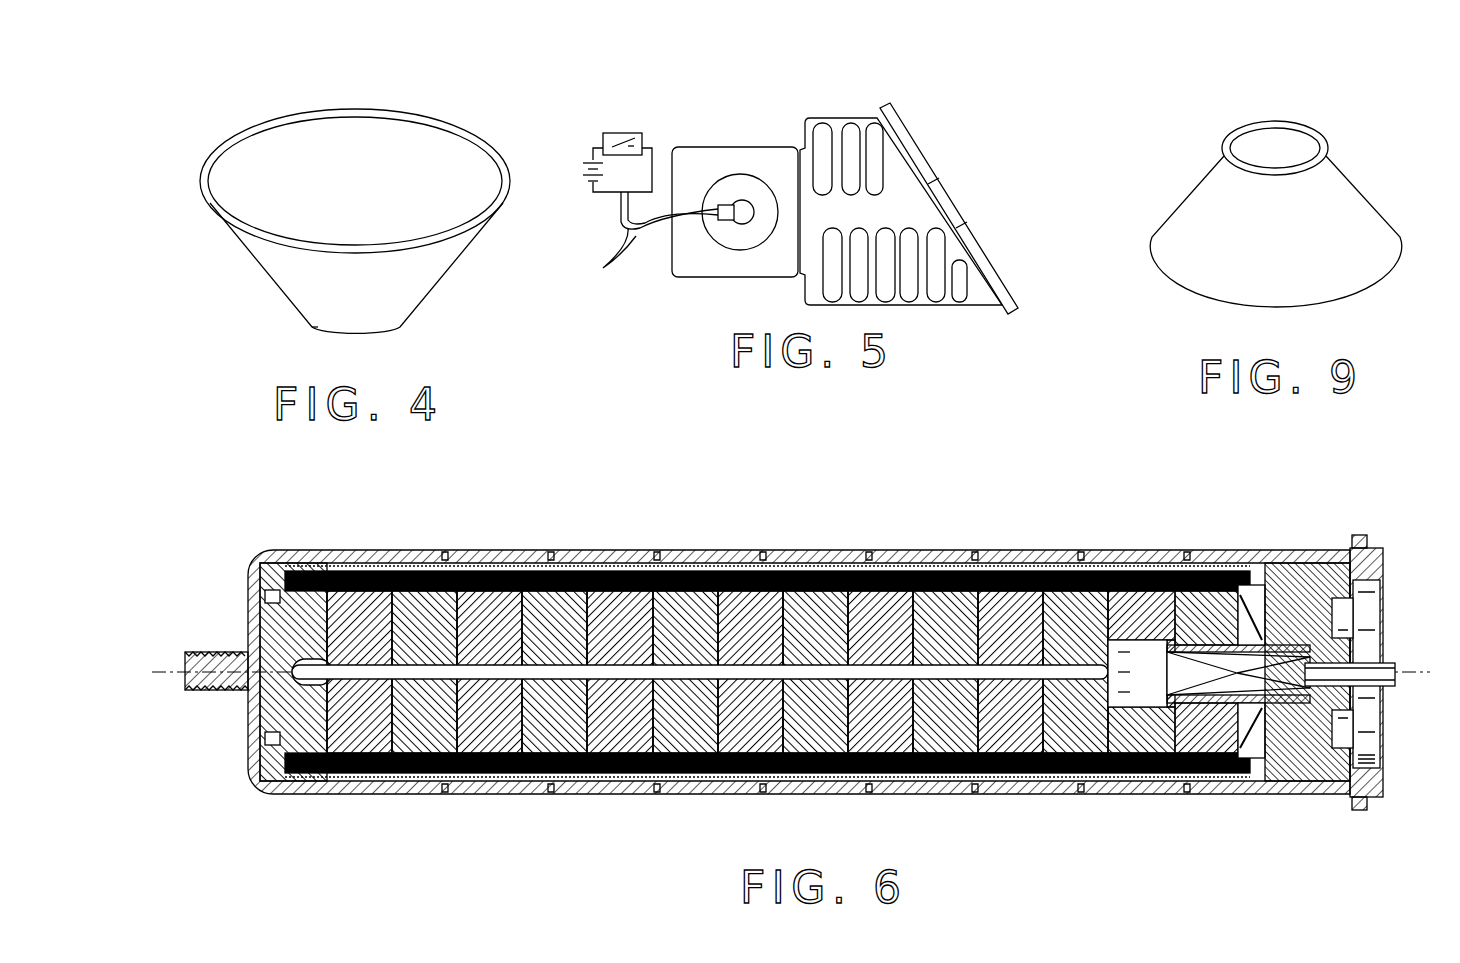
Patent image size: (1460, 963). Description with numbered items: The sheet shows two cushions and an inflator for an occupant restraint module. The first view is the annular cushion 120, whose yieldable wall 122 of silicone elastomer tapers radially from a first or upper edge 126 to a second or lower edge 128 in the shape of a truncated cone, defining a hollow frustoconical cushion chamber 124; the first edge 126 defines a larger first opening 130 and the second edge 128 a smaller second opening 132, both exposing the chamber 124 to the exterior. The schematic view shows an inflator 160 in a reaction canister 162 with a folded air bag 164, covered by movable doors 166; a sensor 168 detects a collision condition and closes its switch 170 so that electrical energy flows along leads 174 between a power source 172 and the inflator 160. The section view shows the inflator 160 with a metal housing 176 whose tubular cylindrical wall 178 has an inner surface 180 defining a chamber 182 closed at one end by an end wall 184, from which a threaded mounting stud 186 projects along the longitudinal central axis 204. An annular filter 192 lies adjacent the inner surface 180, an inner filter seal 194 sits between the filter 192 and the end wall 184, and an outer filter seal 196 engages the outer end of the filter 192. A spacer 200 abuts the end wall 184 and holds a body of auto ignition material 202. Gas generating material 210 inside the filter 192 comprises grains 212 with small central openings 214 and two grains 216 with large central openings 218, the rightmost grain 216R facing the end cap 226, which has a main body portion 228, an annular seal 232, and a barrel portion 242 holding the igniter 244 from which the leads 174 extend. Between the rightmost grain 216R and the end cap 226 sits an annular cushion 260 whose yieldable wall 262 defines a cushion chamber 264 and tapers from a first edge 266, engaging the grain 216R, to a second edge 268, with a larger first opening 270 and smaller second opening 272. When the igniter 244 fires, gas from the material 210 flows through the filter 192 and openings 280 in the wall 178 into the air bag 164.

In FIG. 4, the annular cushion 120 is at (258, 104).
In FIG. 4, the yieldable wall 122 is at (288, 267).
In FIG. 4, the cushion chamber 124 is at (366, 172).
In FIG. 4, the first edge 126 is at (248, 130).
In FIG. 4, the second edge 128 is at (312, 327).
In FIG. 4, the first opening 130 is at (412, 132).
In FIG. 4, the second opening 132 is at (402, 333).
In FIG. 5, the inflator 160 is at (745, 182).
In FIG. 6, the inflator 160 is at (600, 514).
In FIG. 5, the reaction canister 162 is at (748, 279).
In FIG. 5, the air bag 164 is at (848, 130).
In FIG. 5, the movable doors 166 is at (930, 185).
In FIG. 5, the sensor 168 is at (614, 133).
In FIG. 5, the switch 170 is at (640, 137).
In FIG. 5, the power source 172 is at (595, 178).
In FIG. 5, the leads 174 is at (605, 268).
In FIG. 6, the leads 174 is at (1396, 670).
In FIG. 6, the housing 176 is at (707, 548).
In FIG. 6, the tubular cylindrical wall 178 is at (616, 551).
In FIG. 6, the cylindrical inner surface 180 is at (455, 575).
In FIG. 6, the chamber 182 is at (1128, 556).
In FIG. 6, the end wall 184 is at (249, 616).
In FIG. 6, the threaded mounting stud 186 is at (220, 690).
In FIG. 6, the annular filter 192 is at (393, 573).
In FIG. 6, the inner filter seal 194 is at (262, 572).
In FIG. 6, the outer filter seal 196 is at (1247, 787).
In FIG. 6, the spacer 200 is at (300, 590).
In FIG. 6, the auto ignition material 202 is at (295, 795).
In FIG. 6, the longitudinal central axis 204 is at (1410, 674).
In FIG. 6, the gas generating material 210 is at (608, 780).
In FIG. 6, the grains of first group 212 is at (420, 760).
In FIG. 6, the small diameter central openings 214 is at (838, 766).
In FIG. 6, the grains of second group 216 is at (1185, 700).
In FIG. 6, the rightmost grain 216R is at (1253, 690).
In FIG. 6, the large diameter central openings 218 is at (1127, 707).
In FIG. 6, the end cap 226 is at (1388, 737).
In FIG. 6, the main body portion 228 is at (1315, 790).
In FIG. 6, the annular seal 232 is at (1360, 806).
In FIG. 6, the barrel portion 242 is at (1195, 750).
In FIG. 6, the igniter 244 is at (1128, 568).
In FIG. 9, the annular cushion 260 is at (1176, 138).
In FIG. 6, the annular cushion 260 is at (1330, 580).
In FIG. 9, the yieldable wall 262 is at (1205, 207).
In FIG. 6, the yieldable wall 262 is at (1285, 617).
In FIG. 9, the cushion chamber 264 is at (1262, 158).
In FIG. 9, the first edge 266 is at (1172, 283).
In FIG. 9, the second edge 268 is at (1240, 126).
In FIG. 9, the first opening 270 is at (1330, 306).
In FIG. 9, the second opening 272 is at (1308, 128).
In FIG. 6, the openings 280 is at (868, 549).